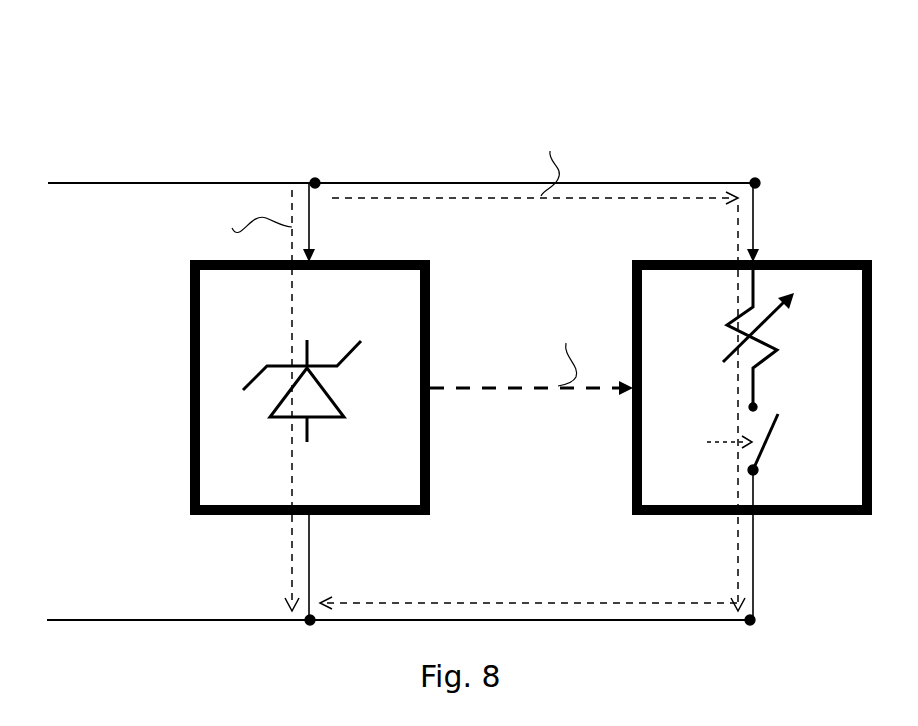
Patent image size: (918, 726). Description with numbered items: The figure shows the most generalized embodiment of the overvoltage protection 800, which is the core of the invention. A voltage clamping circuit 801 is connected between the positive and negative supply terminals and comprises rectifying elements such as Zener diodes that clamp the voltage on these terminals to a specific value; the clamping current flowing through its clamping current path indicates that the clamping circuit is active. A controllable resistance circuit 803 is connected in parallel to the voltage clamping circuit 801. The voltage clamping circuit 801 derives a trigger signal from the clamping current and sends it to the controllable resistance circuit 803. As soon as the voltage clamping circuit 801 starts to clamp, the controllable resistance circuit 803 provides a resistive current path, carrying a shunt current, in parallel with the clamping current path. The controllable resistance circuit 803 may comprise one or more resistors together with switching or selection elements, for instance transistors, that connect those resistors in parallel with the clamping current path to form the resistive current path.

The overvoltage protection 800 is at (712, 82).
The voltage clamping circuit 801 is at (400, 481).
The controllable resistance circuit 803 is at (852, 483).